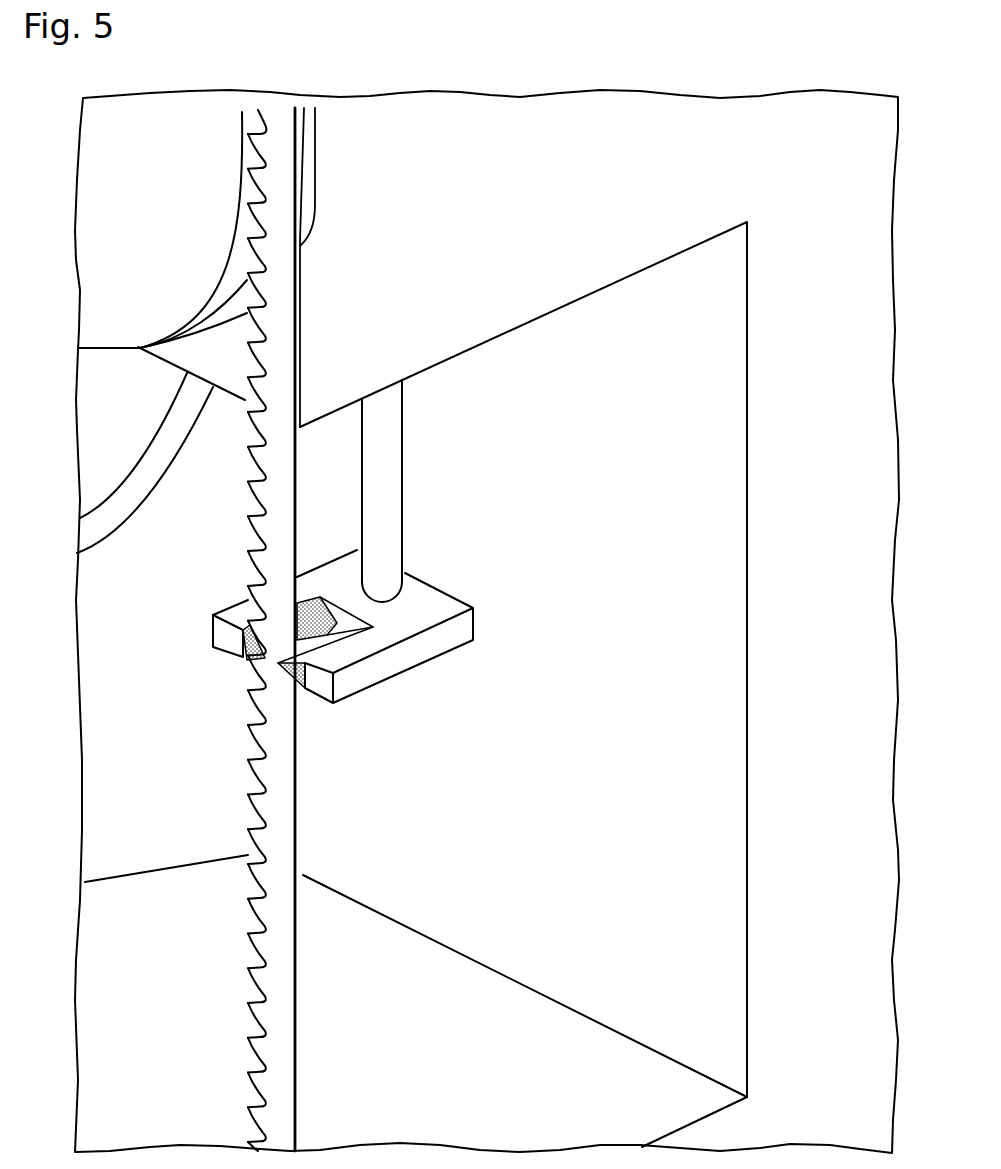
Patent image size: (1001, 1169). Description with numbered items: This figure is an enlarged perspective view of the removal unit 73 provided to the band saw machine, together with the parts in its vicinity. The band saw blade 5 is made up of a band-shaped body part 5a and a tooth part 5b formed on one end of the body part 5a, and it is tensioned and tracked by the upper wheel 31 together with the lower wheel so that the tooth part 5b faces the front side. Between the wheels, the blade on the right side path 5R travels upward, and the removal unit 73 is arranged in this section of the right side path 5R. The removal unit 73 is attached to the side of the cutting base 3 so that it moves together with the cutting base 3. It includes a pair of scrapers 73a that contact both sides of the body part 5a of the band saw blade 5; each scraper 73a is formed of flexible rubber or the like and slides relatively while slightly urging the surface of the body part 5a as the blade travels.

The cutting base 3 is at (840, 597).
The upper wheel 31 is at (93, 330).
The band saw blade 5 is at (265, 629).
The body part 5a is at (275, 814).
The tooth part 5b is at (245, 808).
The right side path 5R is at (312, 935).
The removal unit 73 is at (302, 552).
The scraper 73a is at (277, 667).